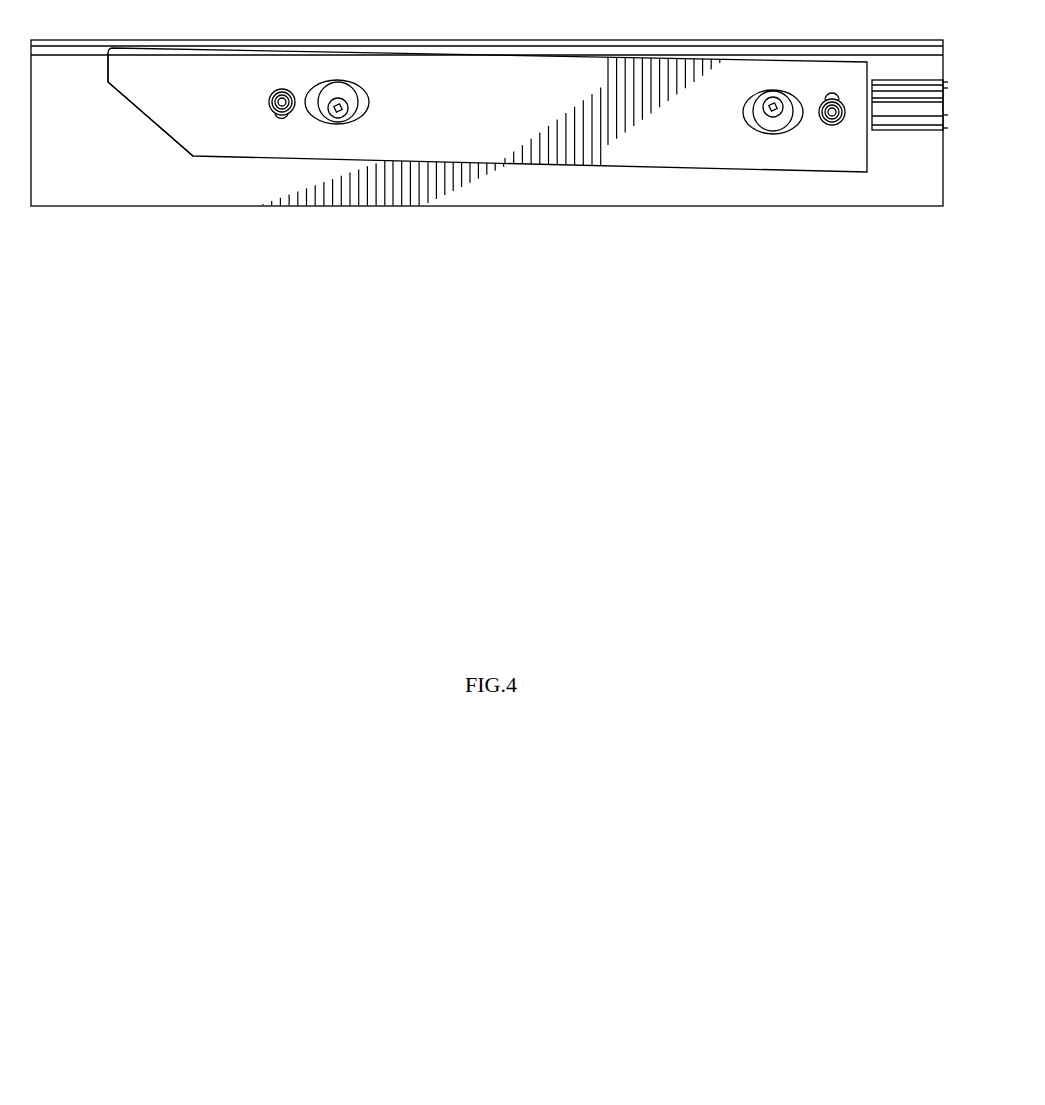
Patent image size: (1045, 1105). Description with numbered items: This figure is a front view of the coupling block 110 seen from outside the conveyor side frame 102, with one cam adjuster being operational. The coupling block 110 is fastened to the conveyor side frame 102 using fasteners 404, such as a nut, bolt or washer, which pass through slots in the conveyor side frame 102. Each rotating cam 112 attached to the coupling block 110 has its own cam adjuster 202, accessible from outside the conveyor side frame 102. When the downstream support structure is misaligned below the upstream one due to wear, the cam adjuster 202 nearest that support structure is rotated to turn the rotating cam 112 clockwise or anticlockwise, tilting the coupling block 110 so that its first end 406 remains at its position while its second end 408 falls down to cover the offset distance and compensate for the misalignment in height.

The conveyor side frame 102 is at (898, 170).
The coupling block 110 is at (531, 122).
The rotating cam 112 is at (760, 125).
The cam adjuster 202 is at (335, 118).
The fastener 404 is at (268, 115).
The first end of the coupling block 406 is at (130, 82).
The second end of the coupling block 408 is at (855, 140).